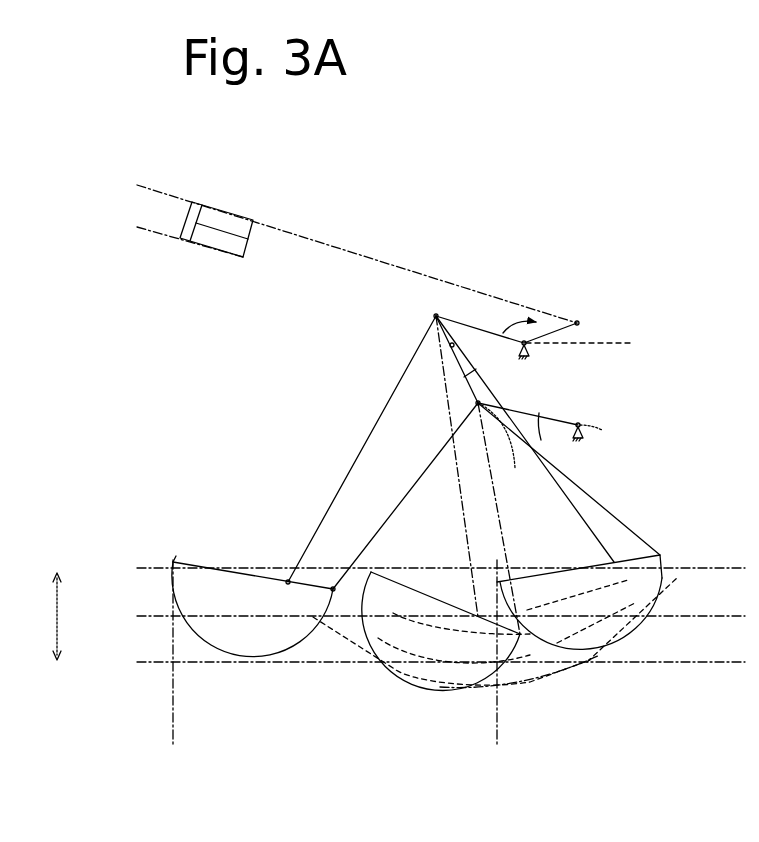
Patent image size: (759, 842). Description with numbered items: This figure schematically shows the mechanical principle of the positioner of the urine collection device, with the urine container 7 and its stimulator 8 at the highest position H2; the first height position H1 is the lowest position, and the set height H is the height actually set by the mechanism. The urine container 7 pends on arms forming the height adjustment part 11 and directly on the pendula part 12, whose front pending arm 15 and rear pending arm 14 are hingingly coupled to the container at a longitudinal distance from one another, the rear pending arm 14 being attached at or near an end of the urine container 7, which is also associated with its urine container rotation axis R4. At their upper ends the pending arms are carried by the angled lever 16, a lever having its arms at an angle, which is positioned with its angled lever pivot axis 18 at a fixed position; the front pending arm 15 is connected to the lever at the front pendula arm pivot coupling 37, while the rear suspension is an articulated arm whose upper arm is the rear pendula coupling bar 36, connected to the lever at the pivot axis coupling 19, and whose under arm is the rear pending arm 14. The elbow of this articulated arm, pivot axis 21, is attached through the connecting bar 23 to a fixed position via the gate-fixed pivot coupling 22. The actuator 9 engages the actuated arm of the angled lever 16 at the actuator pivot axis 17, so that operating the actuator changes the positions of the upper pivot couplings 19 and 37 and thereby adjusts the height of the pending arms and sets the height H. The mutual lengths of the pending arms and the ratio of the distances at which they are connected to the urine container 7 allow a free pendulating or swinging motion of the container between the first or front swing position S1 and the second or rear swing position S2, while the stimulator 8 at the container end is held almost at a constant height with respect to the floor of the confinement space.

The urine container 7 is at (210, 647).
The stimulator 8 is at (173, 566).
The actuator 9 is at (162, 212).
The height adjustment part 11 is at (396, 350).
The pendula part 12 is at (336, 472).
The rear pending arm 14 is at (412, 487).
The front pending arm 15 is at (387, 400).
The angled lever 16 is at (474, 326).
The actuator pivot axis 17 is at (577, 321).
The angled lever pivot axis 18 is at (524, 350).
The pivot axis coupling angled lever and rear pendula arm 19 is at (452, 348).
The pivot axis 21 is at (501, 445).
The gate-fixed pivot coupling 22 is at (605, 434).
The connecting bar 23 is at (560, 422).
The rear pendula coupling bar 36 is at (557, 341).
The front pendula arm pivot coupling 37 is at (436, 316).
The urine container rotation axis R4 is at (288, 582).
The set height H is at (68, 616).
The first height position H1 is at (424, 663).
The second height position H2 is at (424, 563).
The first or front swing position S1 is at (170, 674).
The second or rear swing position S2 is at (493, 674).